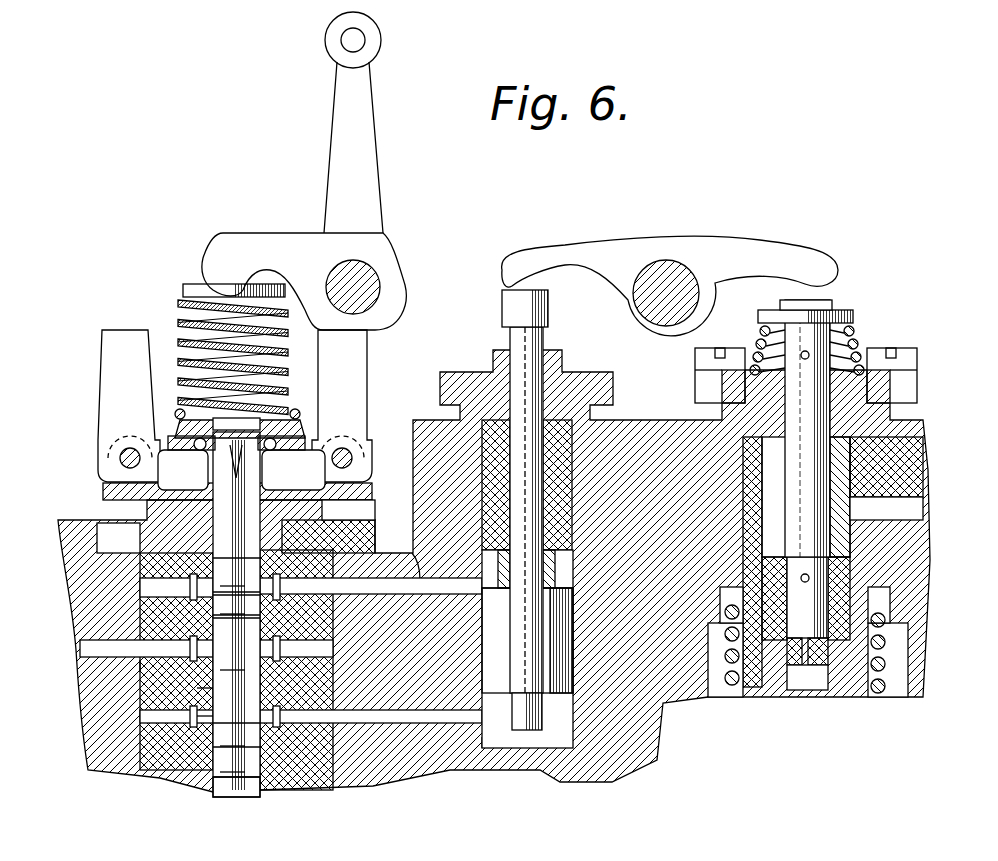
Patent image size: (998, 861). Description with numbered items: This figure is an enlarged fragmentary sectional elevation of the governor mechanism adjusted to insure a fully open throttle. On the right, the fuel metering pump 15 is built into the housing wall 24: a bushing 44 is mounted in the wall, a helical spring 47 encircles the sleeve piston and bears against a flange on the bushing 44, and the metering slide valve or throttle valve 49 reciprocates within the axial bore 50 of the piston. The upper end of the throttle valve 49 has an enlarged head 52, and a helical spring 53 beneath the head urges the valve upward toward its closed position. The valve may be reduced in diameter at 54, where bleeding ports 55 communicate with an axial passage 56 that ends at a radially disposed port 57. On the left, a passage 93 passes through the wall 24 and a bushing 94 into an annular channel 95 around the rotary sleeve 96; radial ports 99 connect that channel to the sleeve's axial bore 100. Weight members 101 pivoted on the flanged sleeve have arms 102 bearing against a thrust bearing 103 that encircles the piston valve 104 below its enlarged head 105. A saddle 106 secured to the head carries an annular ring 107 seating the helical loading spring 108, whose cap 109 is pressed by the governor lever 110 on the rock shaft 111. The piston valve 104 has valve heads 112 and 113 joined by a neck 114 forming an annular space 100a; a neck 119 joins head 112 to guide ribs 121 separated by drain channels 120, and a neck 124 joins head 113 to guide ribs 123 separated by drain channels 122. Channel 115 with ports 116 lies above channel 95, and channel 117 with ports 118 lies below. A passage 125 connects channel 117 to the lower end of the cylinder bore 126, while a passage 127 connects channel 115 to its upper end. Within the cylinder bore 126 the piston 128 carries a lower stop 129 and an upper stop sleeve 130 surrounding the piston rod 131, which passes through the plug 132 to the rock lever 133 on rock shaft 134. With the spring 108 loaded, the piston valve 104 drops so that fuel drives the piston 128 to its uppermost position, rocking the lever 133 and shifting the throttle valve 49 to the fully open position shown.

The governor lever 110 is at (375, 213).
The rock shaft 111 is at (380, 272).
The cap 109 is at (185, 291).
The helical loading spring 108 is at (285, 372).
The weight members 101 is at (355, 373).
The enlarged head 105 is at (185, 428).
The saddle 106 is at (280, 412).
The annular ring 107 is at (300, 432).
The thrust bearing 103 is at (208, 480).
The piston valve 104 is at (195, 470).
The arm 102 is at (293, 470).
The drain channels 120 is at (322, 516).
The guide ribs 121 is at (375, 536).
The passage 127 is at (412, 558).
The plug 132 is at (585, 470).
The piston rod 131 is at (538, 520).
The stop sleeve 130 is at (553, 574).
The piston 128 is at (540, 650).
The stop 129 is at (525, 728).
The rock lever 133 is at (612, 245).
The rock shaft 134 is at (663, 318).
The radially disposed port 57 is at (800, 360).
The enlarged head 52 is at (852, 320).
The helical spring 53 is at (855, 335).
The fuel metering pump 15 is at (936, 320).
The metering slide valve (throttle valve) 49 is at (818, 394).
The bushing 44 is at (860, 474).
The reduced portion 54 is at (825, 562).
The bleeding ports 55 is at (809, 579).
The axial passage 56 is at (836, 612).
The helical spring 47 is at (880, 645).
The axial bore 50 is at (795, 672).
The annular channel 115 is at (190, 584).
The radial ports 116 is at (140, 600).
The housing wall (body wall) 24 is at (90, 615).
The axial bore 100 is at (100, 646).
The passage 93 is at (148, 650).
The bushing 94 is at (140, 670).
The annular channel 95 is at (197, 690).
The sleeve 96 is at (197, 717).
The annular channel 117 is at (200, 705).
The radial ports 118 is at (197, 723).
The drain channels 122 is at (232, 797).
The guide ribs 123 is at (268, 797).
The passage 125 is at (385, 724).
The cylinder bore 126 is at (480, 738).
The radial ports 99 is at (255, 685).
The annular space 100a is at (250, 693).
The neck 119 is at (233, 579).
The valve head 112 is at (233, 607).
The neck 114 is at (233, 663).
The valve head 113 is at (233, 739).
The neck 124 is at (233, 765).